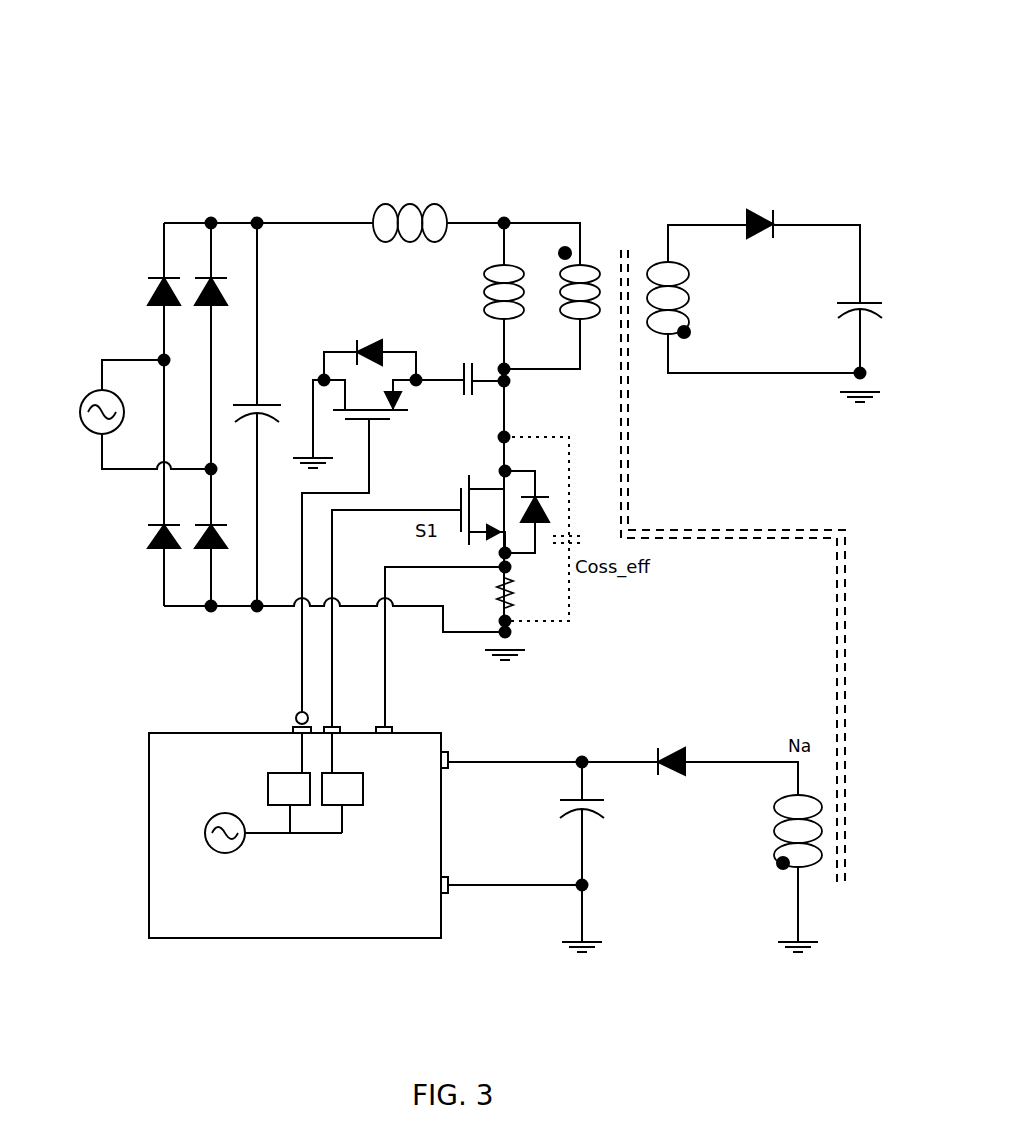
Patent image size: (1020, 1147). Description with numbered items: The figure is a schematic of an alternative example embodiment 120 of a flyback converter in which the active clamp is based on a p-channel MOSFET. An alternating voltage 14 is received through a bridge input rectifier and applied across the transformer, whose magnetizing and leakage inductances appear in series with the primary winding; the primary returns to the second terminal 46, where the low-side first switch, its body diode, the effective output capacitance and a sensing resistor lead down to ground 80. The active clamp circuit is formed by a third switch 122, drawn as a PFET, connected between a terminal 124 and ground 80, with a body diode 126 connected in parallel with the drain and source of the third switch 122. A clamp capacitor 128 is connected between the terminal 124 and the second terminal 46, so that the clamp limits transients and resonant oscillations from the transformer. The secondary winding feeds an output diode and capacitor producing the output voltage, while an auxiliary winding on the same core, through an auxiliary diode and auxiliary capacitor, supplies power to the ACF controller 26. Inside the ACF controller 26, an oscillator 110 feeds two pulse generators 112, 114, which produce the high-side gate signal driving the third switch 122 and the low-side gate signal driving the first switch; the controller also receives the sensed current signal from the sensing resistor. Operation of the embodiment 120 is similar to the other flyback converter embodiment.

The alternative example embodiment of a flyback converter 120 is at (694, 69).
The alternating voltage 14 is at (85, 430).
The body diode 126 is at (370, 345).
The third switch 122 is at (398, 412).
The terminal 124 is at (447, 382).
The clamp capacitor 128 is at (474, 392).
The second terminal 46 is at (560, 369).
The ground 80 is at (318, 468).
The active clamp flyback (ACF) controller 26 is at (320, 819).
The pulse generator 112 is at (289, 783).
The pulse generator 114 is at (342, 783).
The oscillator 110 is at (226, 854).